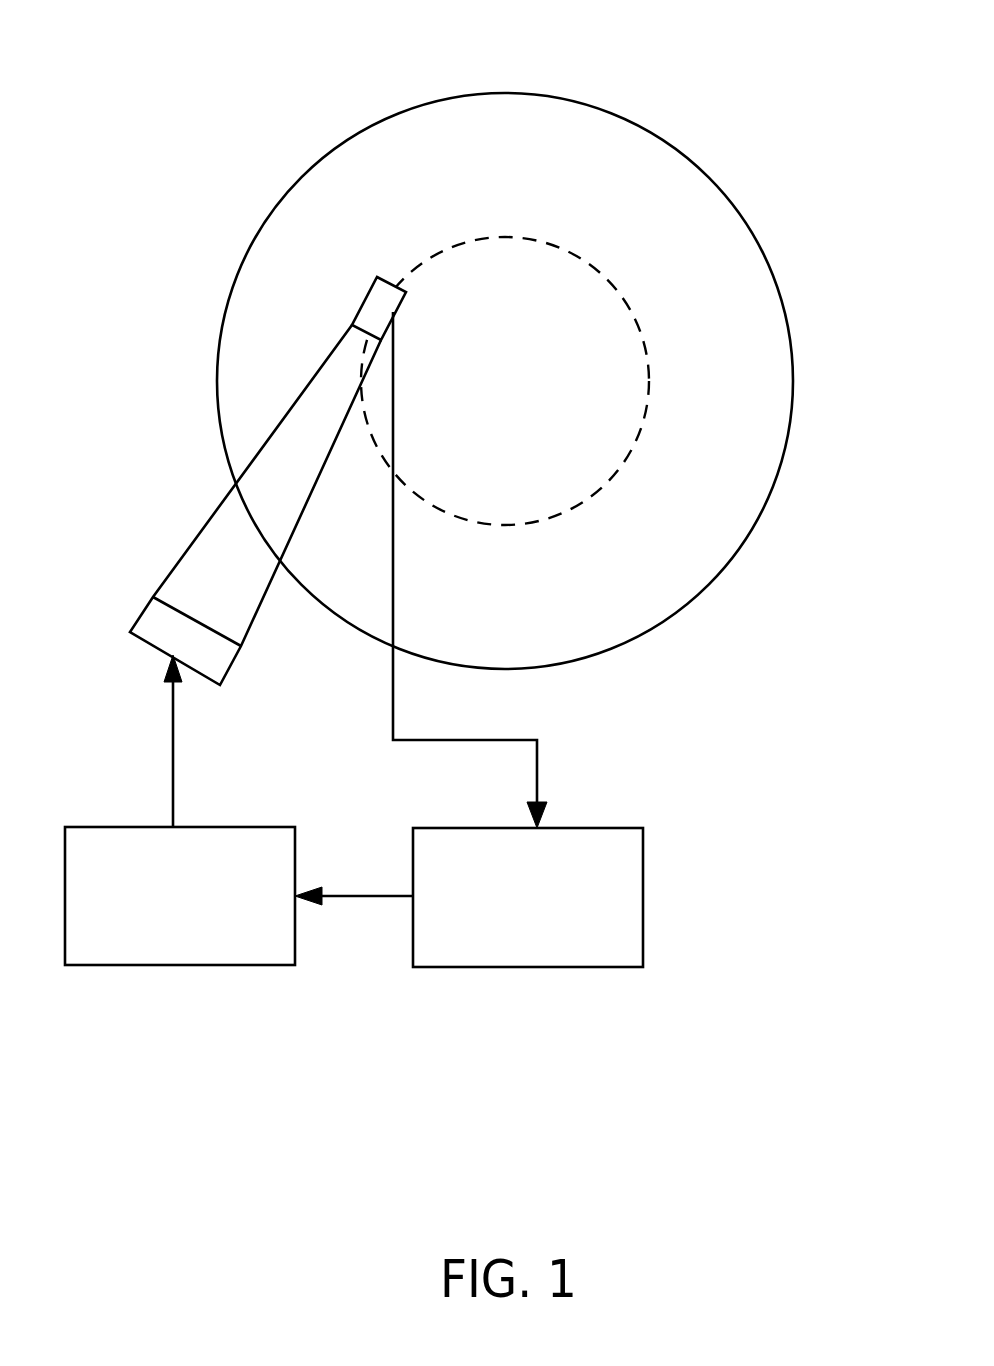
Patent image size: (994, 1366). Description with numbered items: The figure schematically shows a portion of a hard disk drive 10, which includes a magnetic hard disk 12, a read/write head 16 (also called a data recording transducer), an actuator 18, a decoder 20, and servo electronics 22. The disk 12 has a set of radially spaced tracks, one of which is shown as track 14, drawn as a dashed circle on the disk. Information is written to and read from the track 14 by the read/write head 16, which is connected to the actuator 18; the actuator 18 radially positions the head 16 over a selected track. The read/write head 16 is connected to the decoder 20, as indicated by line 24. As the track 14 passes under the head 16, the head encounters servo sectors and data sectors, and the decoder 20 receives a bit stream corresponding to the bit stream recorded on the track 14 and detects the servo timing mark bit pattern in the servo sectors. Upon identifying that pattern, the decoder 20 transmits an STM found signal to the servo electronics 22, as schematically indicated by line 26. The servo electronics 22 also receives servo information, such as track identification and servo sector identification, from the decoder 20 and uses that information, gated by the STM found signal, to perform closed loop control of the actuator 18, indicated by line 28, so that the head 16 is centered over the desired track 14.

The hard disk drive 10 is at (519, 22).
The magnetic hard disk 12 is at (722, 190).
The track 14 is at (607, 278).
The read/write head 16 is at (362, 300).
The actuator 18 is at (177, 556).
The decoder 20 is at (607, 828).
The servo electronics 22 is at (250, 827).
The line 24 is at (540, 757).
The line 26 is at (343, 898).
The line 28 is at (173, 742).